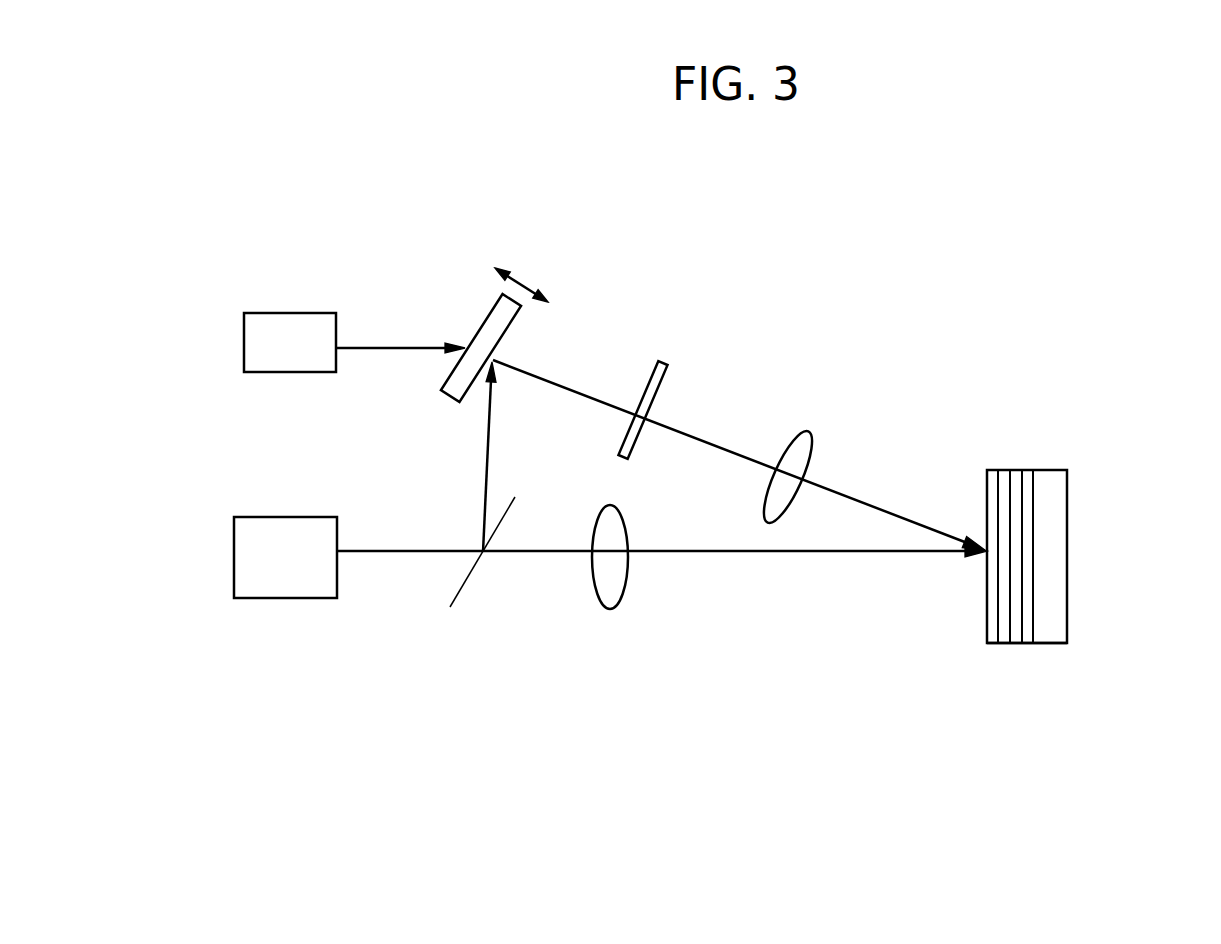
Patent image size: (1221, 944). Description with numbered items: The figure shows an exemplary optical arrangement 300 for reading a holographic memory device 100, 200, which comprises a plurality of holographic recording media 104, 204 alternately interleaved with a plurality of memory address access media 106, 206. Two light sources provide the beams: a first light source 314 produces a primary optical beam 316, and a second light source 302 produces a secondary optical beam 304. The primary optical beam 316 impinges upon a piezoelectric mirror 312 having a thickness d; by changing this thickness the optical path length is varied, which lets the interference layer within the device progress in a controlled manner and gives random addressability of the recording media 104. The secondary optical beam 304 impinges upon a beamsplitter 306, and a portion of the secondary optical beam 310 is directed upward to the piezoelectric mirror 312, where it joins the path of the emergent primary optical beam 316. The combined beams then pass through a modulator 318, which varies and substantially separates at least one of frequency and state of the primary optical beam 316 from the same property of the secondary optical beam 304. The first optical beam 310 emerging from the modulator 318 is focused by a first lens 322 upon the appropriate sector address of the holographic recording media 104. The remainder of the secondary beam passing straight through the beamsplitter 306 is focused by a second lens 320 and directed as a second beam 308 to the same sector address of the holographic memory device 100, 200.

The optical measurement system 300 is at (530, 805).
The second light source 302 is at (303, 600).
The secondary optical beam 304 is at (400, 548).
The beamsplitter 306 is at (462, 587).
The second beam 308 is at (772, 552).
The portion of the secondary optical beam 310 is at (485, 458).
The piezoelectric mirror 312 is at (518, 315).
The first light source 314 is at (280, 313).
The primary optical beam 316 is at (368, 343).
The modulator 318 is at (668, 377).
The second lens 320 is at (615, 595).
The first lens 322 is at (817, 427).
The holographic memory device 100 is at (1022, 564).
The holographic memory device 200 is at (1022, 564).
The holographic recording media 104 is at (1095, 506).
The memory address access media 106 is at (1052, 440).
The holographic recording media 204 is at (960, 689).
The memory address access media 206 is at (945, 649).
The thickness d is at (527, 280).